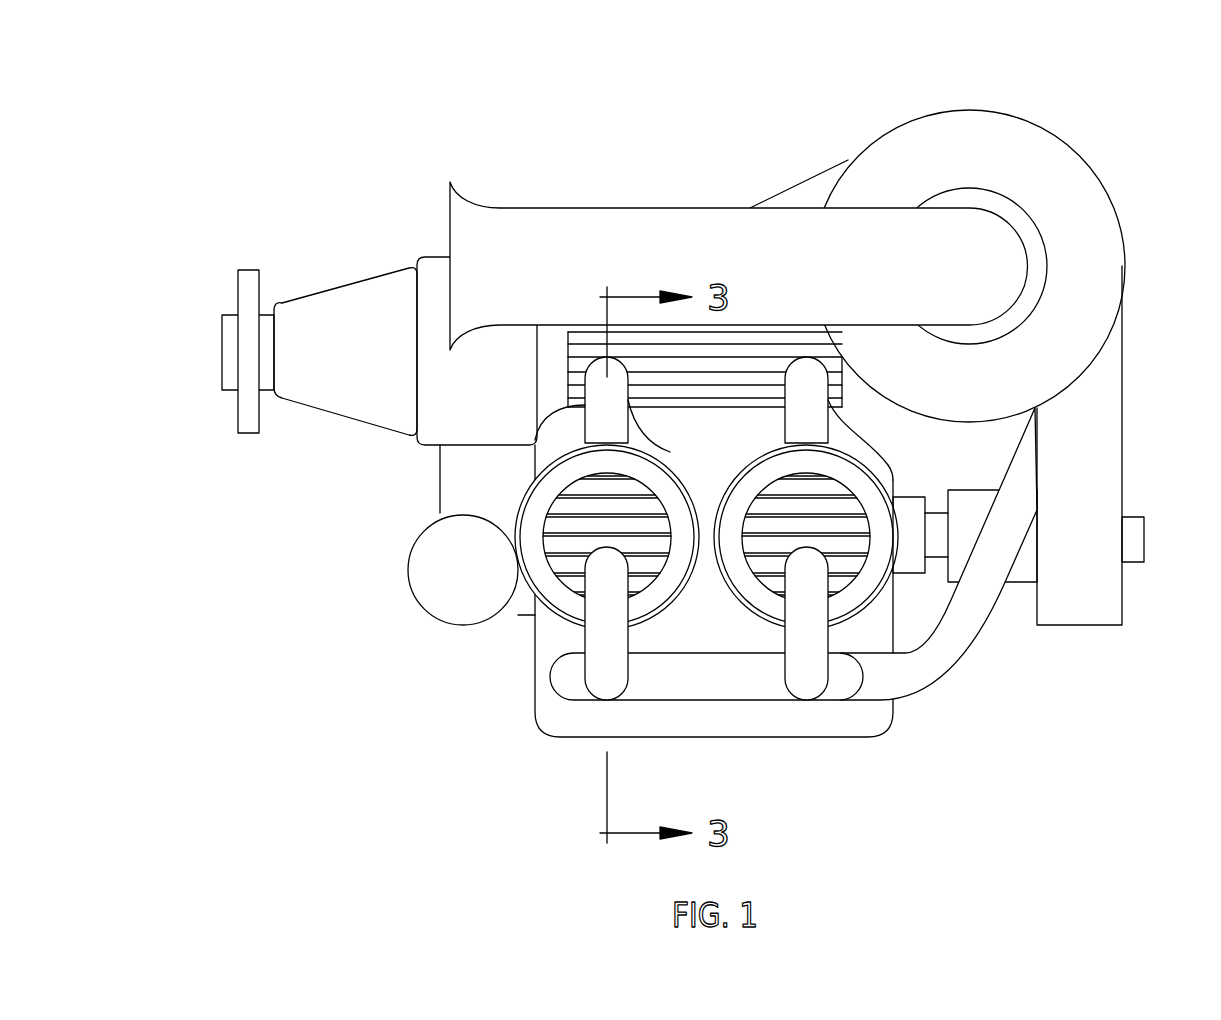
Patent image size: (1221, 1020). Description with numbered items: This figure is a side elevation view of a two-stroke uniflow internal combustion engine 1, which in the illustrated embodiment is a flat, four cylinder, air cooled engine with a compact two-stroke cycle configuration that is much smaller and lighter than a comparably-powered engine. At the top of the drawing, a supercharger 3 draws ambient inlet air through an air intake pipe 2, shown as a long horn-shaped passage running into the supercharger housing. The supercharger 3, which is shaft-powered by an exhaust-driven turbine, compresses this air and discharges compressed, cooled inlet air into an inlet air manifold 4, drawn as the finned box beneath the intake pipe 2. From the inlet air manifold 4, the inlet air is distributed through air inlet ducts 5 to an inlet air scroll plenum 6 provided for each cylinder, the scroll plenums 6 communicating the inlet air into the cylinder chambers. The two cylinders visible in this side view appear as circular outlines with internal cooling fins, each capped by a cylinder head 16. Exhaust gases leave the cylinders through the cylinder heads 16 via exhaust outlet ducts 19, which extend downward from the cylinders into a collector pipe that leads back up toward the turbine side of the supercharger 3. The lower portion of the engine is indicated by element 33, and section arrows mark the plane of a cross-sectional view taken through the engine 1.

The engine 1 is at (257, 125).
The air intake pipe 2 is at (600, 207).
The supercharger 3 is at (1040, 122).
The inlet air manifold 4 is at (583, 353).
The air inlet duct 5 is at (585, 390).
The inlet air scroll plenum 6 is at (850, 438).
The cylinder head 16 is at (573, 545).
The exhaust outlet duct 19 is at (603, 632).
The engine block 33 is at (773, 725).